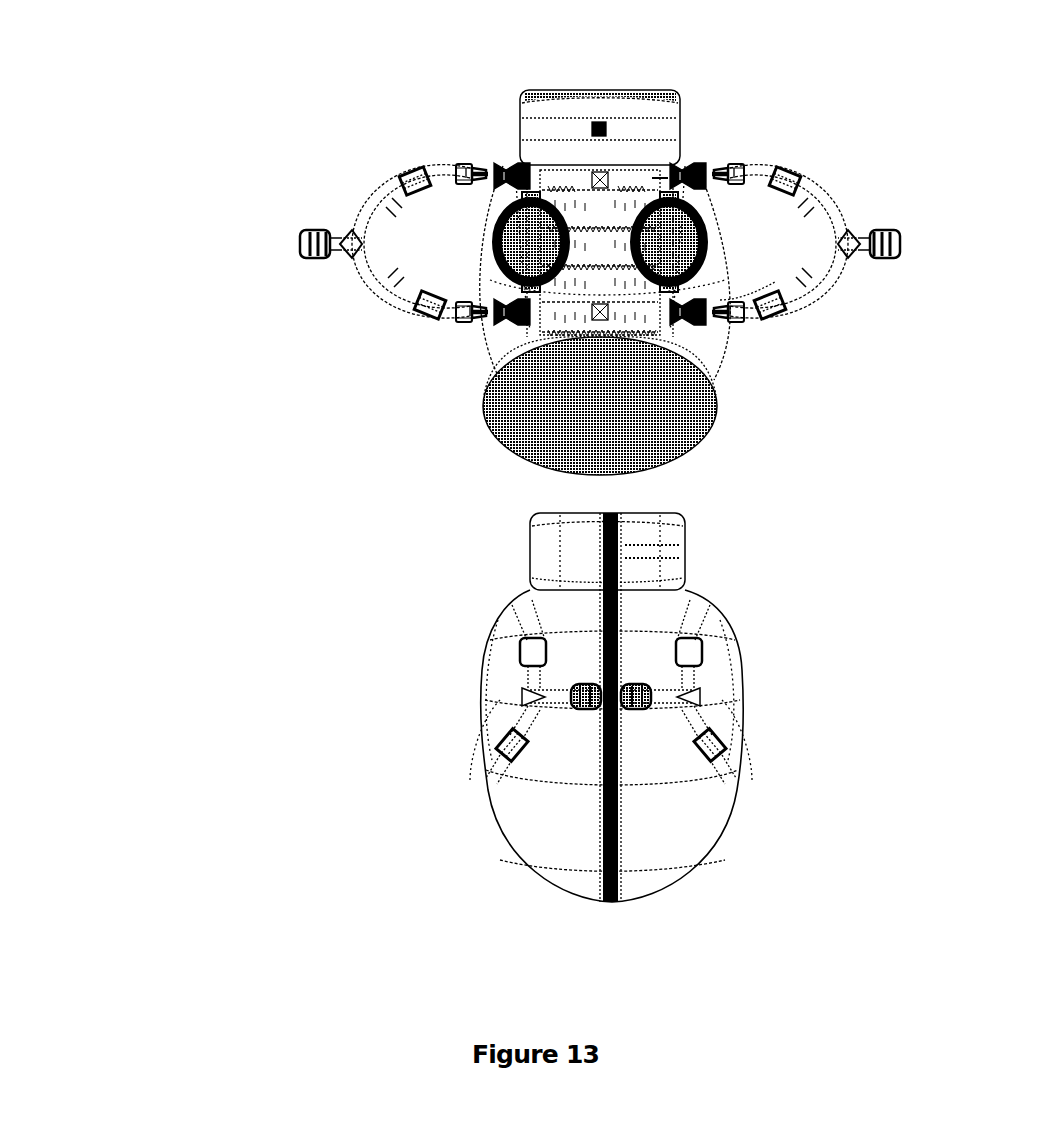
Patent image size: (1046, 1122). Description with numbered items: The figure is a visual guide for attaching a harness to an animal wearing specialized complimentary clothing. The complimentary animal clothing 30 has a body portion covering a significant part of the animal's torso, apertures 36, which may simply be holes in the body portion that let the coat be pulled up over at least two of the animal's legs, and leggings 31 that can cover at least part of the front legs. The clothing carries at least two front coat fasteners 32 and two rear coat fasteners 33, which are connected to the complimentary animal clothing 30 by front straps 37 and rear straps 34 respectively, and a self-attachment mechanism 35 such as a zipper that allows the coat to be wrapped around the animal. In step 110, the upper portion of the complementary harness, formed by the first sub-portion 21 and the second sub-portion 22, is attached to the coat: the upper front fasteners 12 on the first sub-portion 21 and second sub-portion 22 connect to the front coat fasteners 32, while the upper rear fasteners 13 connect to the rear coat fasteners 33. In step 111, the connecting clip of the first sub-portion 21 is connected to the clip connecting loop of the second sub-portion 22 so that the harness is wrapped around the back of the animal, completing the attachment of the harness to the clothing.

The upper front fasteners 12 is at (712, 170).
The upper rear fasteners 13 is at (738, 316).
The first sub-portion 21 is at (838, 278).
The second sub-portion 22 is at (360, 272).
The complimentary animal clothing 30 is at (578, 73).
The leggings 31 is at (700, 227).
The front coat fasteners 32 is at (511, 166).
The rear coat fasteners 33 is at (508, 318).
The rear straps 34 is at (532, 323).
The self-attachment mechanism 35 is at (616, 625).
The apertures 36 is at (700, 243).
The front straps 37 is at (661, 176).
The step 110 is at (150, 120).
The step 111 is at (140, 685).